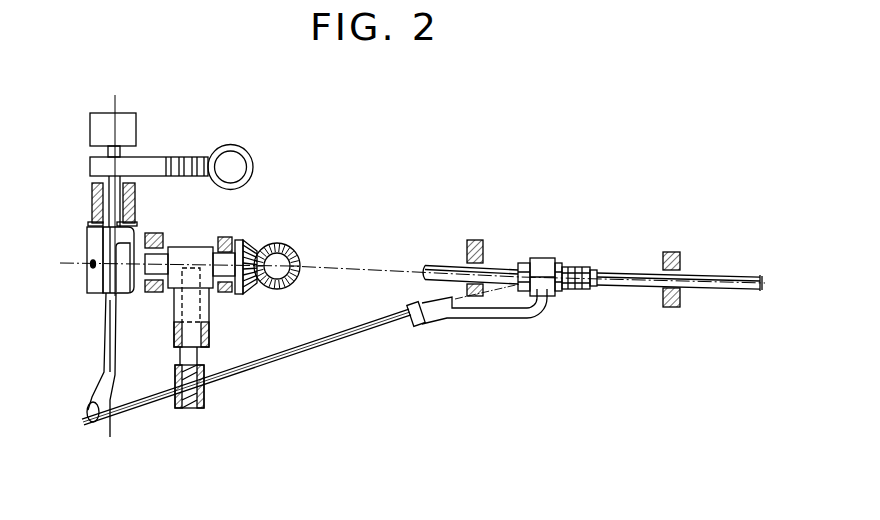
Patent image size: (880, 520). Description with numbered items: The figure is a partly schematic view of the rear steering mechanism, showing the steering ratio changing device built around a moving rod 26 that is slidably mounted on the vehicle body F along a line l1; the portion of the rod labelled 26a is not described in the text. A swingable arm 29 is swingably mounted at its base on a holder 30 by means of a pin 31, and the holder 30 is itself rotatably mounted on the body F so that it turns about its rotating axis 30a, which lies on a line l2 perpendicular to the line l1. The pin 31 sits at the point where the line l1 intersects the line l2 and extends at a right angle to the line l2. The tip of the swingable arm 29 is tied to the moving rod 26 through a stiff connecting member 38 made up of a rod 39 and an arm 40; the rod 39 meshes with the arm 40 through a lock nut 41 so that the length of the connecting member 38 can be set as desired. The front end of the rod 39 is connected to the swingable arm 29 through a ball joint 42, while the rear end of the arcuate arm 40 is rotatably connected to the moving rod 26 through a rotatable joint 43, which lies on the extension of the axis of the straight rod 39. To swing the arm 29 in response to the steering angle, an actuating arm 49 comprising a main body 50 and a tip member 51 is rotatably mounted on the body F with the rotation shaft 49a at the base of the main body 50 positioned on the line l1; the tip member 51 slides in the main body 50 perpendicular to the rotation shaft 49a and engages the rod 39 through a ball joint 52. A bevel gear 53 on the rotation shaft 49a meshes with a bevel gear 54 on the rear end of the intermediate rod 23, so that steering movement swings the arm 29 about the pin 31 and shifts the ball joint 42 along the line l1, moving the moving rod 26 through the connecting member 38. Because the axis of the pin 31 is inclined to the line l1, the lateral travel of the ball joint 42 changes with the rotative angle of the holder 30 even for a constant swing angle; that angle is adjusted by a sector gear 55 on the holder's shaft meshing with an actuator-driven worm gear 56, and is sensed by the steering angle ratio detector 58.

The intermediate rod 23 is at (284, 268).
The moving rod 26 is at (716, 276).
The serrated shaft portion 26a is at (577, 289).
The swingable arm 29 is at (105, 327).
The holder 30 is at (88, 243).
The rotating axis 30a is at (118, 207).
The pin 31 is at (90, 268).
The connecting member 38 is at (333, 347).
The rod 39 is at (262, 366).
The arm 40 is at (497, 318).
The lock nut 41 is at (416, 326).
The ball joint 42 is at (114, 425).
The rotatable joint 43 is at (541, 258).
The actuating arm 49 is at (222, 336).
The rotation shaft 49a is at (165, 255).
The main body 50 is at (213, 300).
The tip member 51 is at (205, 354).
The ball joint 52 is at (195, 410).
The bevel gear 53 is at (250, 242).
The bevel gear 54 is at (301, 262).
The sector gear 55 is at (171, 157).
The worm gear 56 is at (234, 146).
The steering angle ratio detector 58 is at (90, 133).
The vehicle body F is at (90, 197).
The line l1 is at (397, 270).
The line l2 is at (117, 108).